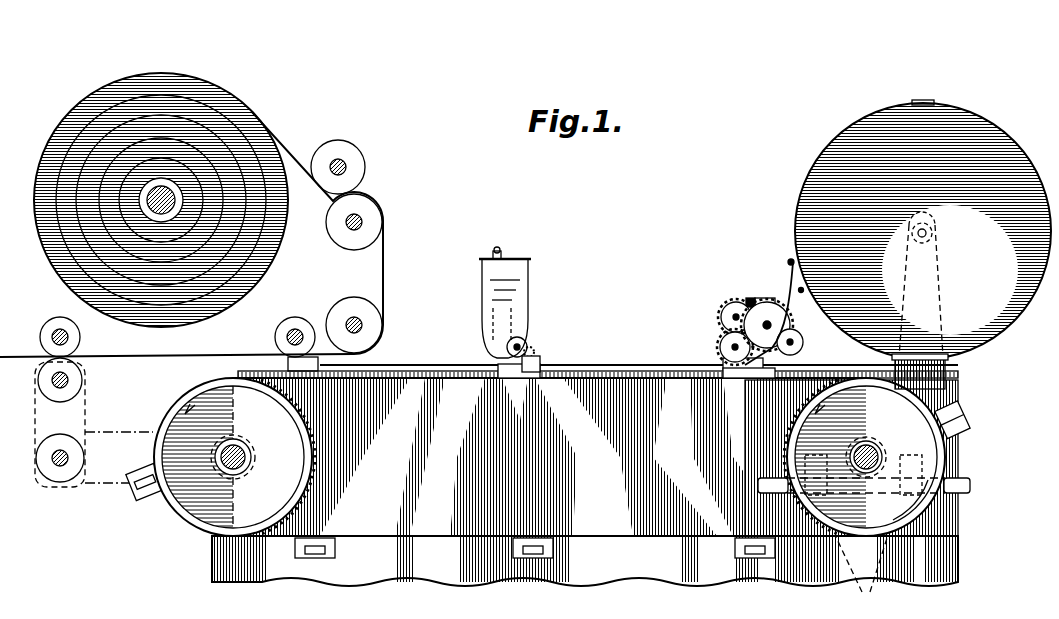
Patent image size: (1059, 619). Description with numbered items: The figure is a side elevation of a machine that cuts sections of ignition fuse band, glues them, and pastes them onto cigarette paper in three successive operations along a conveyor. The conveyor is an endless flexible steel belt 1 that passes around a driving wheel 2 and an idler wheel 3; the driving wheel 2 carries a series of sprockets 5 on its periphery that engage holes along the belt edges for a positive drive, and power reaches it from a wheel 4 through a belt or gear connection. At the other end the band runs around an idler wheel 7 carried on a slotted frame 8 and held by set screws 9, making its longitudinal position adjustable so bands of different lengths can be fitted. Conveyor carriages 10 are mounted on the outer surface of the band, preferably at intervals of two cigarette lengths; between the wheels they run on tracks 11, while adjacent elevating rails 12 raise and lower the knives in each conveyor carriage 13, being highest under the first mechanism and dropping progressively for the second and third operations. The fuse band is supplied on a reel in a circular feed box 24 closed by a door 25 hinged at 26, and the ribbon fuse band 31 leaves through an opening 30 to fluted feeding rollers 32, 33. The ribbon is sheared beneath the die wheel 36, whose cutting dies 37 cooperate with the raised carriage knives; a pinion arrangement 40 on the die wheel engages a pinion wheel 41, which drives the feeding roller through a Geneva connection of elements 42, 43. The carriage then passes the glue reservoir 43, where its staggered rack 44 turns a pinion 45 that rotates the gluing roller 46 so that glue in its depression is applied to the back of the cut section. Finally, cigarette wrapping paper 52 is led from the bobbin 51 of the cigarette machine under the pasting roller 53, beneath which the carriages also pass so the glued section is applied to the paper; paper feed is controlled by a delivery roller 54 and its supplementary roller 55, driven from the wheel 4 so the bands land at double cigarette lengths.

The steel belt 1 is at (597, 378).
The driving wheel 2 is at (200, 497).
The idler wheel 3 is at (930, 453).
The wheel 4 is at (64, 474).
The sprockets 5 is at (310, 486).
The idler wheel 7 is at (902, 511).
The slotted frame 8 is at (970, 485).
The set screws 9 is at (861, 573).
The conveyor carriages 10 is at (325, 558).
The tracks 11 is at (838, 380).
The elevating rails 12 is at (790, 372).
The conveyor carriage 13 is at (962, 412).
The feed box 24 is at (800, 183).
The door 25 is at (848, 150).
The hinge 26 is at (948, 347).
The opening 30 is at (789, 262).
The ribbon fuse band 31 is at (799, 290).
The feeding roller 32 is at (796, 338).
The feeding roller 33 is at (778, 322).
The die wheel 36 is at (722, 363).
The cutting dies 37 is at (722, 350).
The pinion arrangement 40 is at (722, 340).
The pinion wheel 41 is at (728, 306).
The Geneva connection element 42 is at (730, 320).
The glue reservoir 43 is at (505, 280).
The staggered rack 44 is at (538, 360).
The pinion 45 is at (531, 347).
The gluing roller 46 is at (521, 340).
The bobbin 51 is at (157, 203).
The cigarette wrapping paper 52 is at (293, 155).
The pasting roller 53 is at (283, 336).
The delivery roller 54 is at (76, 381).
The supplementary roller 55 is at (83, 338).